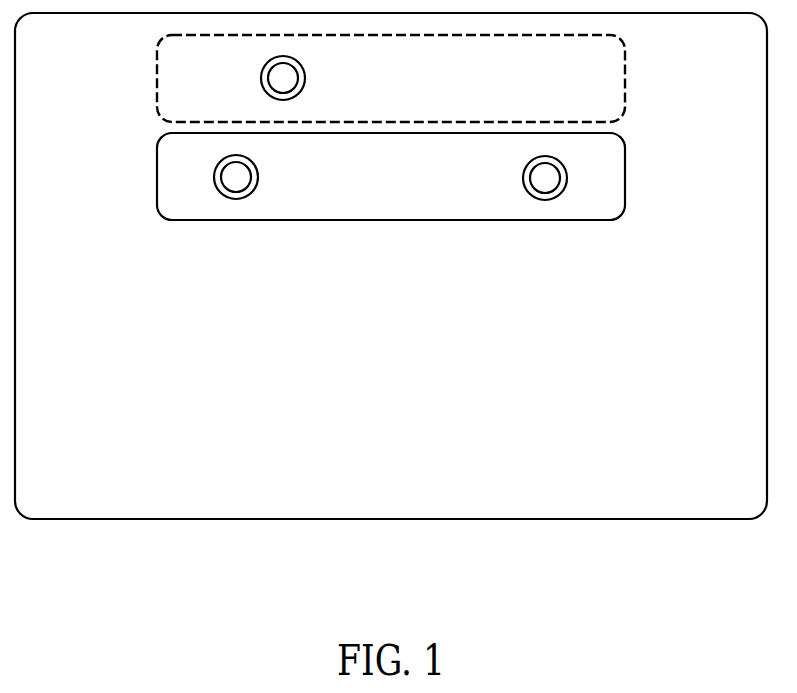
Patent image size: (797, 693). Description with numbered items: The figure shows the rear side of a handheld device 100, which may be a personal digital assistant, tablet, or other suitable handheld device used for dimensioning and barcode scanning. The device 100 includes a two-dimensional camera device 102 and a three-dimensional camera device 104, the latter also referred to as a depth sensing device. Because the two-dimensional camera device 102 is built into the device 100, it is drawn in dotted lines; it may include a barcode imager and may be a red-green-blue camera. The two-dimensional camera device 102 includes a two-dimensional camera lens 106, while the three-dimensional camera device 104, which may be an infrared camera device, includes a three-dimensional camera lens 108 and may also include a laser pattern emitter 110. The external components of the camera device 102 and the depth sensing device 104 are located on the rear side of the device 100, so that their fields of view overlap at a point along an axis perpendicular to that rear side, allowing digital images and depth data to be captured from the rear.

The device 100 is at (411, 593).
The two-dimensional (2D) camera device 102 is at (157, 78).
The three-dimensional (3D) camera device 104 is at (157, 178).
The 2D camera lens 106 is at (305, 78).
The 3D camera lens 108 is at (523, 178).
The laser pattern emitter 110 is at (258, 177).